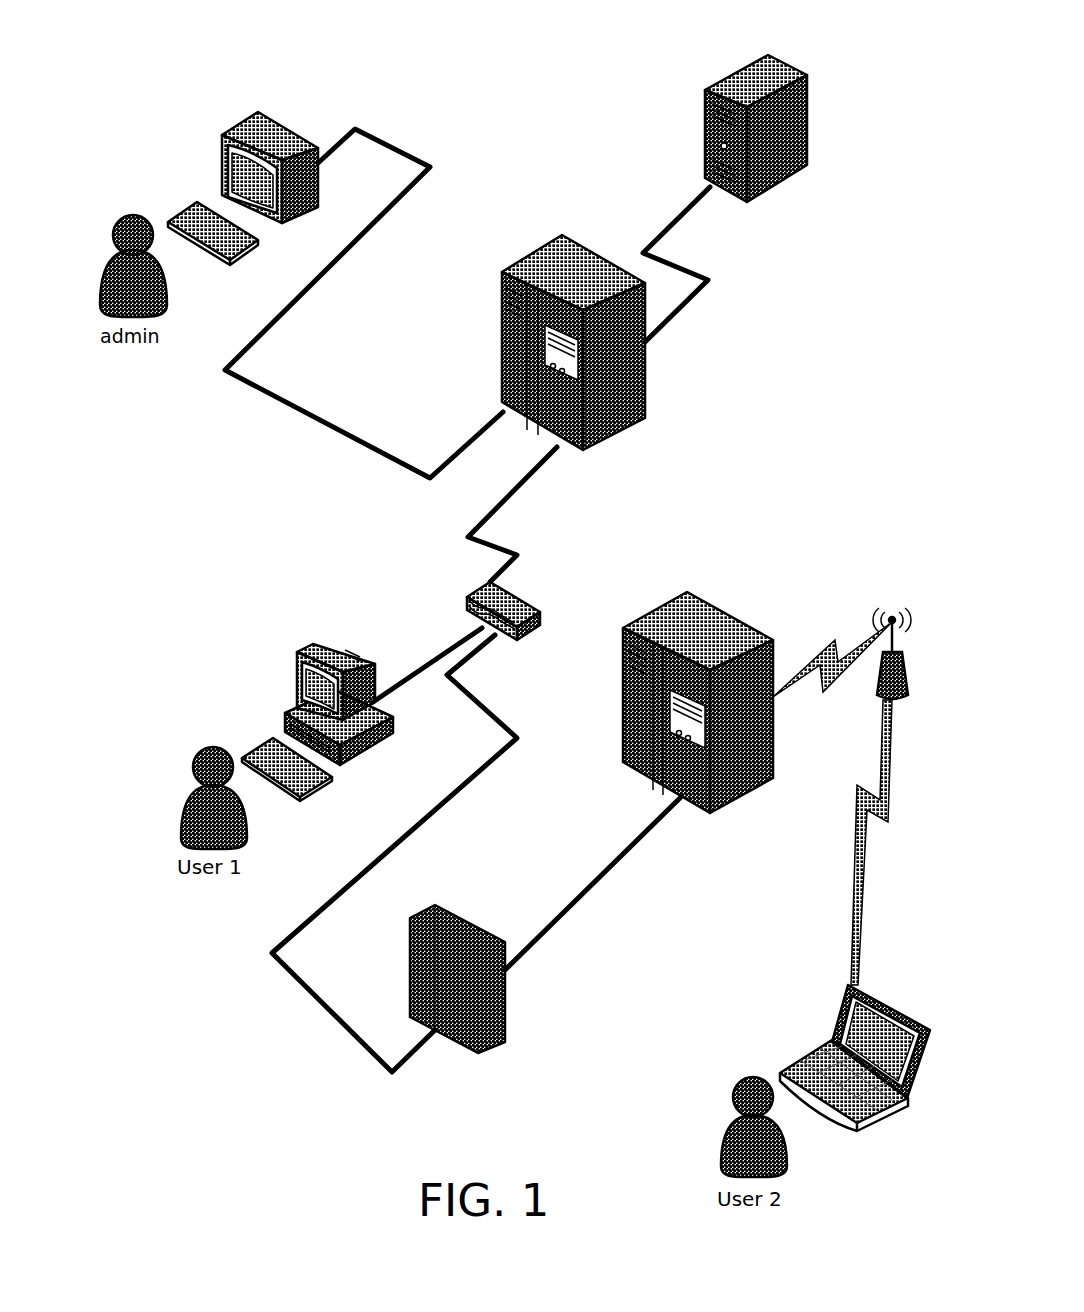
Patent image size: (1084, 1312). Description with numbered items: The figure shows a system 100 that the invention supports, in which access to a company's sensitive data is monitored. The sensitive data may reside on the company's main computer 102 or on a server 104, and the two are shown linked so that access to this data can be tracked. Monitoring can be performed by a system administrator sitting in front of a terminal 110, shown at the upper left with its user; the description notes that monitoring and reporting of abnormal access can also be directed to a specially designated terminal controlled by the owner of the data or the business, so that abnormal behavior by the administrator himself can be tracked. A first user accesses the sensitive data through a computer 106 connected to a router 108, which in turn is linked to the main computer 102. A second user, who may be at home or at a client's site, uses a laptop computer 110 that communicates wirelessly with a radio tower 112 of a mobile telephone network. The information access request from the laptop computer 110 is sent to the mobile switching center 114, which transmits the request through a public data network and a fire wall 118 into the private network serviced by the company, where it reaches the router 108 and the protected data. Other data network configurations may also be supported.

The system 100 is at (226, 76).
The main computer 102 is at (500, 327).
The server 104 is at (705, 127).
The computer 106 is at (297, 683).
The router 108 is at (467, 612).
The terminal / laptop computer 110 is at (220, 192).
The radio tower 112 is at (910, 682).
The mobile switching center 114 is at (737, 611).
The fire wall 118 is at (455, 1047).